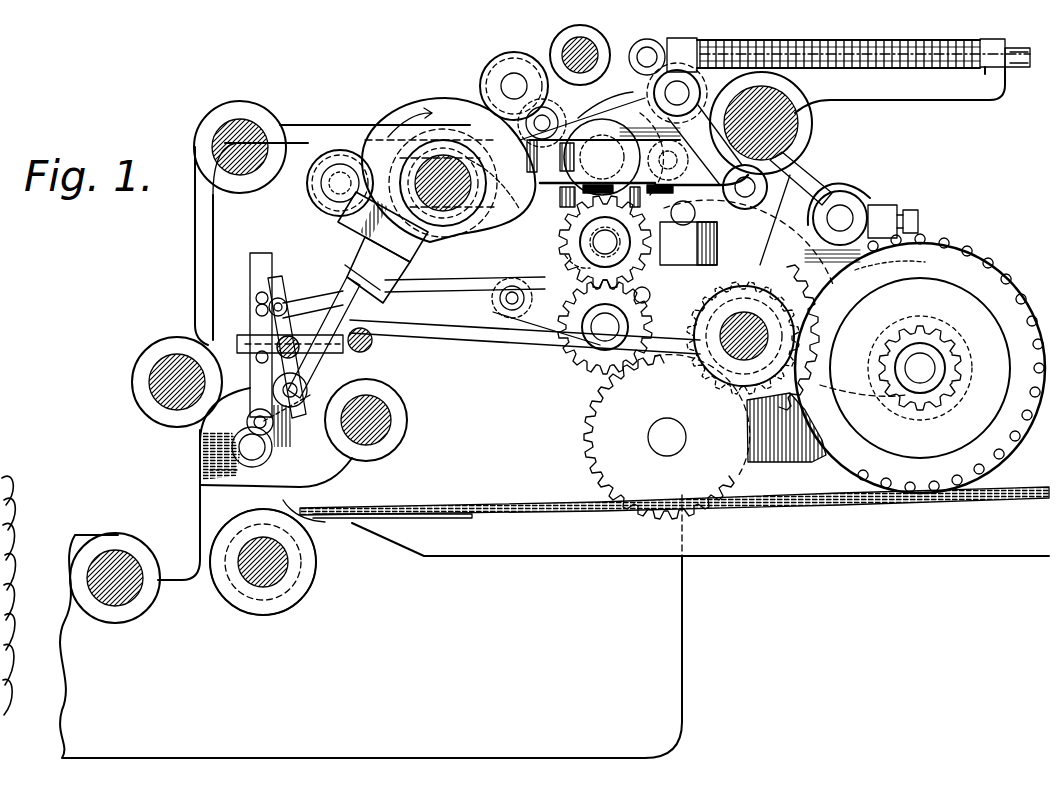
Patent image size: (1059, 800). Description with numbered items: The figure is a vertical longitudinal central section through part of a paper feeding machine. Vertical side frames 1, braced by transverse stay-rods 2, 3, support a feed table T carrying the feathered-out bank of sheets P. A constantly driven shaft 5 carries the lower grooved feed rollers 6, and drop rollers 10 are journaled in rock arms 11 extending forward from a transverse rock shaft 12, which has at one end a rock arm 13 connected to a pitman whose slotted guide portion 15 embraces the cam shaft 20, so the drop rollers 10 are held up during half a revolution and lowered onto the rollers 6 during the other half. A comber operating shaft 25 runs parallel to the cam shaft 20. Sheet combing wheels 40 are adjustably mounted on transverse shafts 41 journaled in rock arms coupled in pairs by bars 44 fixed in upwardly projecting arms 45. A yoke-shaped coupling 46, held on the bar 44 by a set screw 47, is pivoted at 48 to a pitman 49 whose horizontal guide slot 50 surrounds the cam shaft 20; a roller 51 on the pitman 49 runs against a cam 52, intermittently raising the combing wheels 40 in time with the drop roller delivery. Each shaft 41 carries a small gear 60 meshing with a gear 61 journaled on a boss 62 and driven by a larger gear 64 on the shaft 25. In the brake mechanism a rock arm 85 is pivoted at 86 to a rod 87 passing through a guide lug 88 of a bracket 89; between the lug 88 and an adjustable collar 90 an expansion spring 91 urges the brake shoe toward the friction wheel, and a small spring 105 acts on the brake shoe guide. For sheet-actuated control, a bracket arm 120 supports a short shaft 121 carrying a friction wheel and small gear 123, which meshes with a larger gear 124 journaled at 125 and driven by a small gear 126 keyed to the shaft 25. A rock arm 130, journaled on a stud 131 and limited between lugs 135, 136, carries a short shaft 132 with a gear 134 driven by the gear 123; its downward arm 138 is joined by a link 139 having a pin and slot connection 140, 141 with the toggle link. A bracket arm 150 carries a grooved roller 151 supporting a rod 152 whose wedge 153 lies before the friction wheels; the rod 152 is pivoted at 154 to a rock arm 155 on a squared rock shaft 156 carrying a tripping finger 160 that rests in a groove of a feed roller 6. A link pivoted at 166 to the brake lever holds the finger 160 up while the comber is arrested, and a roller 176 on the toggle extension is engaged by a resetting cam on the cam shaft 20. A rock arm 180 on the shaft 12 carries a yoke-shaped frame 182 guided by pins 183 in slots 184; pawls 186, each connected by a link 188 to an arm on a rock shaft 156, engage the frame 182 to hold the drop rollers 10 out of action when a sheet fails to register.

The vertical side frames 1 is at (202, 249).
The transverse stay-rod 2 is at (782, 108).
The transverse stay-rod 3 is at (162, 403).
The constantly driven shaft 5 is at (257, 585).
The lower grooved feed rollers 6 is at (312, 582).
The drop rollers 10 is at (205, 470).
The rock arms 11 is at (330, 462).
The transverse rock shaft 12 is at (395, 415).
The rock arm 13 is at (367, 358).
The slotted guide portion 15 is at (392, 236).
The cam shaft 20 is at (440, 172).
The comber operating shaft 25 is at (683, 400).
The sheet combing wheels 40 is at (1000, 432).
The transverse shafts 41 is at (925, 362).
The transverse bars 44 is at (855, 216).
The upwardly projecting arms 45 is at (835, 190).
The yoke-shaped link or coupling 46 is at (875, 200).
The set screw 47 is at (919, 216).
The pivotal connection 48 is at (792, 172).
The pitman 49 is at (560, 128).
The horizontal guide loop or slot 50 is at (478, 165).
The antifriction roller 51 is at (344, 165).
The cam 52 is at (472, 90).
The small gear wheel 60 is at (946, 371).
The gear wheel 61 is at (905, 301).
The boss 62 is at (900, 268).
The larger gear 64 is at (832, 386).
The rock arm 85 is at (625, 95).
The pivotal connection 86 is at (648, 50).
The rod 87 is at (1020, 50).
The guide lug 88 is at (996, 39).
The bracket 89 is at (896, 96).
The adjustable block or collar 90 is at (700, 38).
The expansion spiral spring 91 is at (843, 50).
The small expansion spiral spring 105 is at (527, 293).
The bracket arm 120 is at (663, 403).
The short shaft 121 is at (602, 352).
The small gear wheel 123 is at (588, 352).
The larger gear 124 is at (596, 468).
The journal 125 is at (665, 456).
The small gear 126 is at (778, 456).
The rock arm 130 is at (700, 274).
The pin or stud 131 is at (695, 300).
The short shaft 132 is at (593, 242).
The small gear wheel 134 is at (585, 230).
The lug 135 is at (706, 185).
The lug 136 is at (662, 268).
The arm 138 is at (588, 262).
The link or pitman 139 is at (613, 154).
The pin 140 is at (677, 170).
The slot 141 is at (675, 158).
The bracket arm 150 is at (540, 331).
The grooved roller 151 is at (499, 298).
The rod 152 is at (455, 280).
The wedge 153 is at (541, 281).
The pivotal connection 154 is at (350, 270).
The rock arm 155 is at (378, 296).
The squared rock shaft 156 is at (371, 346).
The tripping finger 160 is at (322, 516).
The pivotal connection 166 is at (560, 340).
The anti-friction roller 176 is at (540, 60).
The rock arm 180 is at (292, 440).
The yoke-shaped frame 182 is at (257, 313).
The guide pins 183 is at (257, 357).
The vertical elongated slots 184 is at (257, 295).
The dog or pawl 186 is at (283, 299).
The link 188 is at (313, 302).
The bank of sheets P is at (1025, 505).
The feed table T is at (796, 559).